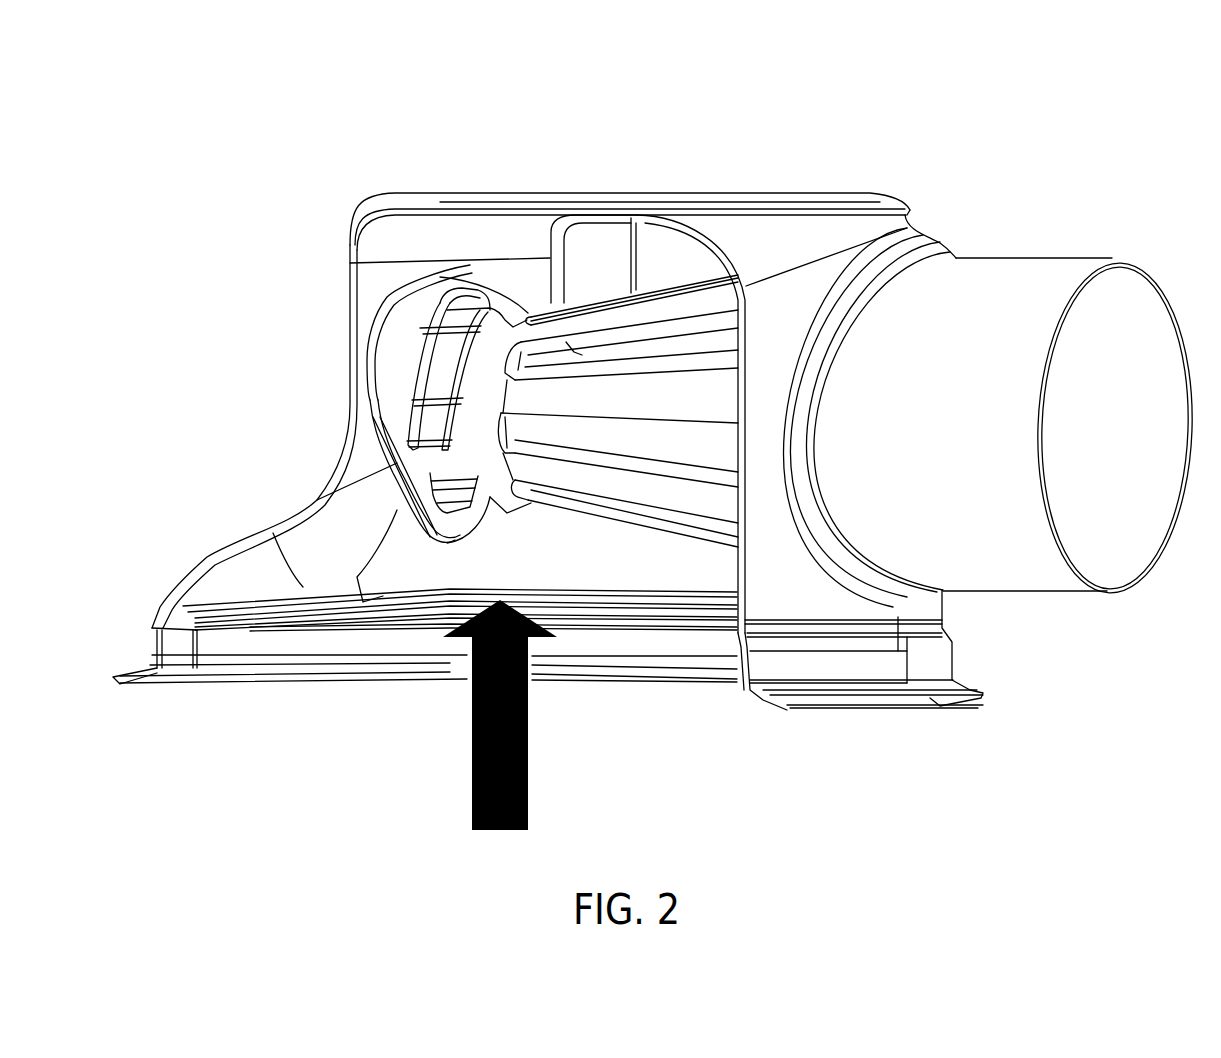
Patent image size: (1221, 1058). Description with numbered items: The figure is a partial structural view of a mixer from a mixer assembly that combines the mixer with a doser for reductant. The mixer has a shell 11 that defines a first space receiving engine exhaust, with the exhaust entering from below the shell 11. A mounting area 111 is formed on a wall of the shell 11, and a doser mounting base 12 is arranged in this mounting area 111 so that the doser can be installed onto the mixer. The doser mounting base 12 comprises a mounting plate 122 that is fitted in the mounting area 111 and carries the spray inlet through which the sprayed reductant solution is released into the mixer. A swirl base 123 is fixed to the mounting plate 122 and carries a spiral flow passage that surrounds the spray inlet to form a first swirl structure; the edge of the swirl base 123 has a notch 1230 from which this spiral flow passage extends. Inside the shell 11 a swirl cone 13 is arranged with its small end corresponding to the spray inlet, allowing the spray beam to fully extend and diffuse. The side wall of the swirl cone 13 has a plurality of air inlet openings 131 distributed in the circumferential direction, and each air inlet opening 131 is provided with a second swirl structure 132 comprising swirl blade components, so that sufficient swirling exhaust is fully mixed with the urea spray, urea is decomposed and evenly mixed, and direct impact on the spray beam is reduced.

The shell 11 is at (813, 210).
The mounting area 111 is at (520, 263).
The doser mounting base 12 is at (397, 387).
The mounting plate 122 is at (414, 330).
The swirl base 123 is at (466, 305).
The notch 1230 is at (429, 462).
The swirl cone 13 is at (663, 500).
The air inlet opening 131 is at (678, 330).
The second swirl structure 132 is at (584, 357).